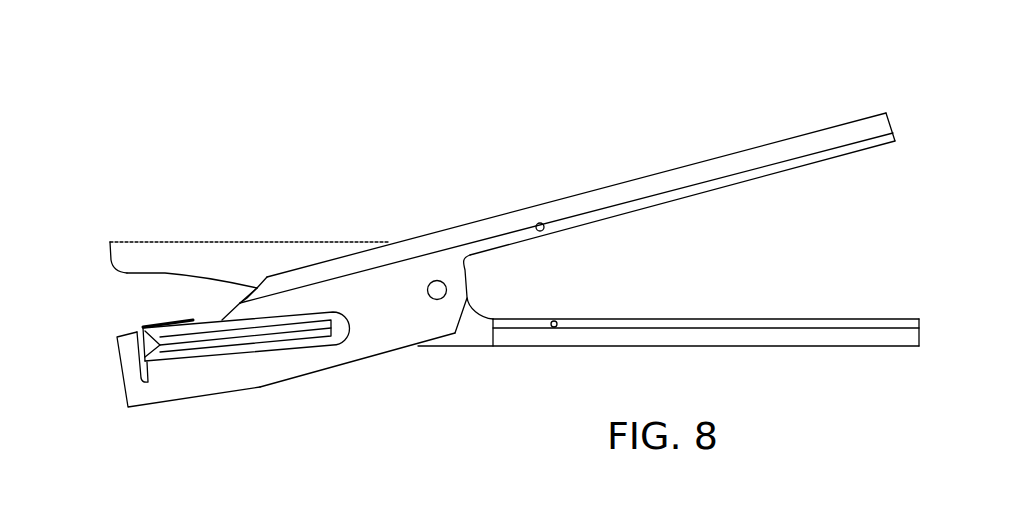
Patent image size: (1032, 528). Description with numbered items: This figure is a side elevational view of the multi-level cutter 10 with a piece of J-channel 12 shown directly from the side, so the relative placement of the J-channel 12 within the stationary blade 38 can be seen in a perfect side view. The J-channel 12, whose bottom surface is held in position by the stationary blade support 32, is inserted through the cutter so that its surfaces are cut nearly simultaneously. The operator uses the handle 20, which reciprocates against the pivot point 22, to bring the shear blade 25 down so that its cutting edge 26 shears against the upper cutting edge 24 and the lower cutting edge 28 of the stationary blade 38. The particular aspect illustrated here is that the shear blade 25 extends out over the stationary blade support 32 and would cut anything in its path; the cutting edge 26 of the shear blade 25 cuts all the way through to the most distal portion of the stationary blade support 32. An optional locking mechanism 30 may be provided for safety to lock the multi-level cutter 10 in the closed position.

The multi-level cutter 10 is at (445, 200).
The J-channel siding 12 is at (140, 325).
The handle 20 is at (683, 175).
The pivot point 22 is at (436, 299).
The stationary blade cutting edge 24 is at (165, 340).
The shear blade 25 is at (243, 258).
The shear blade cutting edge 26 is at (163, 273).
The lower cutting edge 28 is at (217, 358).
The locking mechanism 30 is at (540, 223).
The stationary blade support 32 is at (120, 367).
The stationary blade 38 is at (380, 318).